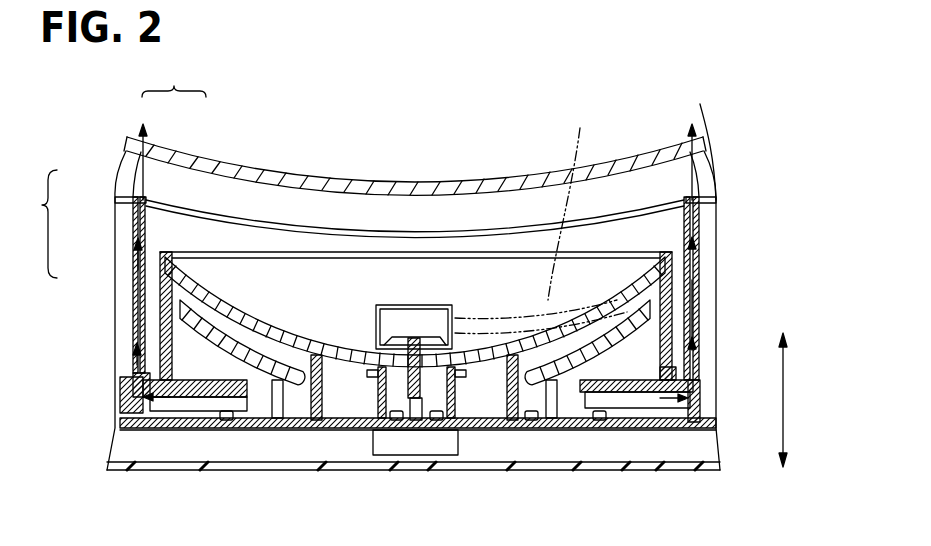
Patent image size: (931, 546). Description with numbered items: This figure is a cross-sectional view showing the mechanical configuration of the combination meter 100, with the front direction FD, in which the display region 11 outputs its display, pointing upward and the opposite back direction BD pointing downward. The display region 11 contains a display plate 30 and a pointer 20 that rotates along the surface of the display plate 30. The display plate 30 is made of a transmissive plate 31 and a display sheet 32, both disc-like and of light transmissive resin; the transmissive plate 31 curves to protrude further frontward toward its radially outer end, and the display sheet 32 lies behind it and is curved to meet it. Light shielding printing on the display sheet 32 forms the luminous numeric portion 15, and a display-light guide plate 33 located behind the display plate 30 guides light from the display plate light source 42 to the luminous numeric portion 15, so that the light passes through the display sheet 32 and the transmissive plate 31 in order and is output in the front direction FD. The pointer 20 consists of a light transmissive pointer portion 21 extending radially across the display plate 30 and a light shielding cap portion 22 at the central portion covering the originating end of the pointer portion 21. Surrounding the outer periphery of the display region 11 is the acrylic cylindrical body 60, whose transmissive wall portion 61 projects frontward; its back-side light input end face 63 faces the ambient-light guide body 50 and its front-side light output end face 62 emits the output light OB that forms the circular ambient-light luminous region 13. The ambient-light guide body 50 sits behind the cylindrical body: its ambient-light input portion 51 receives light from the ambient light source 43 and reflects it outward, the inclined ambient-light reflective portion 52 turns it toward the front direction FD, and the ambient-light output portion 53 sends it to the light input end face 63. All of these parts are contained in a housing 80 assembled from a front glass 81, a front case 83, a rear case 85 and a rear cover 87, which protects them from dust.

The combination meter 100 is at (714, 130).
The display region 11 is at (246, 295).
The ambient-light luminous region 13 is at (699, 174).
The luminous numeric portion 15 is at (632, 296).
The pointer 20 is at (578, 197).
The pointer portion 21 is at (541, 317).
The cap portion 22 is at (440, 304).
The display plate 30 is at (403, 223).
The transmissive plate 31 is at (205, 268).
The display sheet 32 is at (217, 297).
The display-light guide plate 33 is at (172, 298).
The display plate light source 42 is at (305, 420).
The ambient light source 43 is at (230, 420).
The ambient-light guide body 50 is at (672, 432).
The ambient-light input portion 51 is at (567, 430).
The ambient-light reflective portion 52 is at (703, 467).
The ambient-light output portion 53 is at (695, 376).
The acrylic cylindrical body 60 is at (708, 279).
The transmissive wall portion 61 is at (413, 310).
The light output end face 62 is at (712, 196).
The light input end face 63 is at (704, 383).
The housing 80 is at (131, 293).
The front glass 81 is at (121, 160).
The front case 83 is at (113, 185).
The rear case 85 is at (118, 378).
The rear cover 87 is at (147, 462).
The output light OB is at (703, 137).
The front direction FD is at (799, 395).
The back direction BD is at (806, 462).